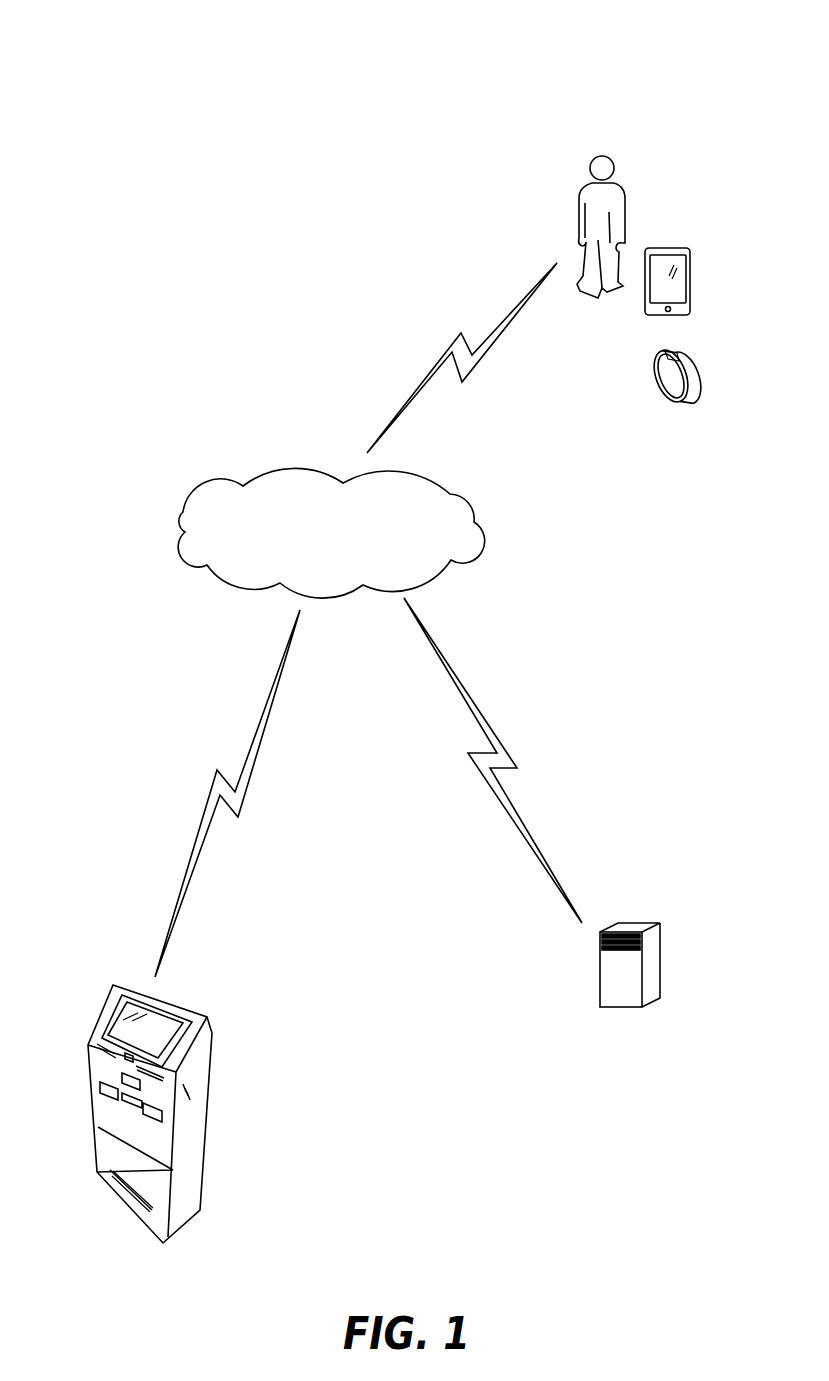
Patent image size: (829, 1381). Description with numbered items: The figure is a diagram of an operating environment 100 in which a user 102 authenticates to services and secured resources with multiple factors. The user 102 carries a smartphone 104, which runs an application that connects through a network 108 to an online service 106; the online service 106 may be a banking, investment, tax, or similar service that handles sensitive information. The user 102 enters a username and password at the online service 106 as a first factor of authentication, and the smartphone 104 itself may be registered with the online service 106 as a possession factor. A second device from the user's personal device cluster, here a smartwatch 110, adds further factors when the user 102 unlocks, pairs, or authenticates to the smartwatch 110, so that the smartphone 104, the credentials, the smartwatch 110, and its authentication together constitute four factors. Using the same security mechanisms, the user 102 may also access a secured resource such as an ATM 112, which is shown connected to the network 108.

The operating environment 100 is at (637, 50).
The user 102 is at (625, 200).
The smartphone 104 is at (690, 277).
The online service 106 is at (660, 943).
The network 108 is at (460, 493).
The smartwatch 110 is at (703, 368).
The ATM 112 is at (200, 1107).